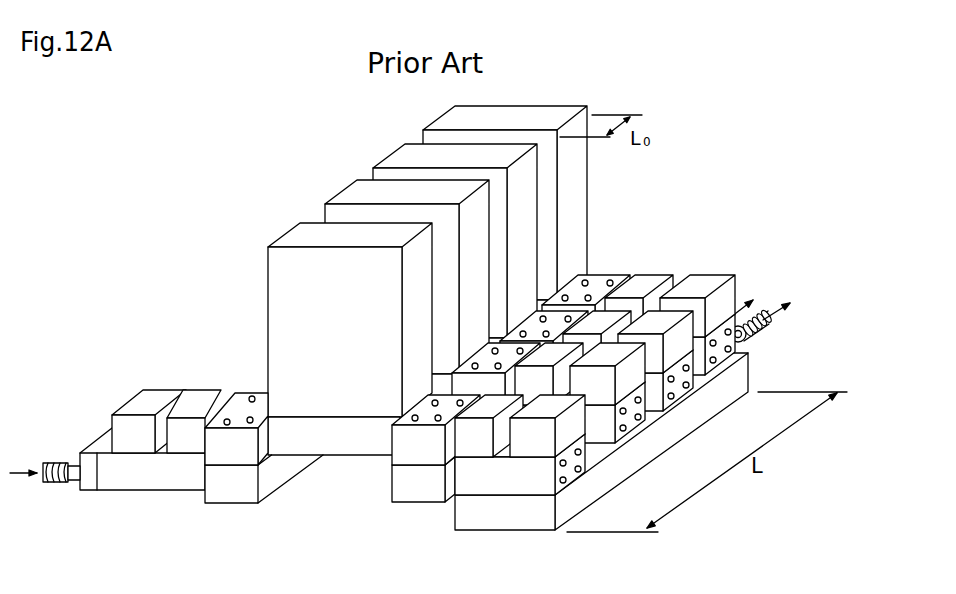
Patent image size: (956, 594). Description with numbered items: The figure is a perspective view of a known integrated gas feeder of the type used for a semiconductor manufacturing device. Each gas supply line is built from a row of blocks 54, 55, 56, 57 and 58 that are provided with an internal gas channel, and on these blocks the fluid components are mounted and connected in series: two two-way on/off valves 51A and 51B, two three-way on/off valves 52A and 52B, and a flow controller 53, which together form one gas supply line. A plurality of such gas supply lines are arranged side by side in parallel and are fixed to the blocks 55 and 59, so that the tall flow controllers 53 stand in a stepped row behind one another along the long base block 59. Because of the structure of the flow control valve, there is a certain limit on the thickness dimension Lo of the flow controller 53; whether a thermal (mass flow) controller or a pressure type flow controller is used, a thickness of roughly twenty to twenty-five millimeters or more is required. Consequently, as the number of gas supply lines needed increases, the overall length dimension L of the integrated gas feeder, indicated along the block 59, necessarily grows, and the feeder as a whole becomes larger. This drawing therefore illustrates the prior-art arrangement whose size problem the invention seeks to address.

The two-way on/off valve 51A is at (140, 407).
The two-way on/off valve 51B is at (203, 402).
The three-way on/off valve 52A is at (533, 438).
The three-way on/off valve 52B is at (477, 438).
The flow controller 53 is at (292, 298).
The block 54 is at (133, 478).
The block 55 is at (227, 490).
The block 56 is at (248, 445).
The block 57 is at (337, 450).
The block 58 is at (507, 478).
The block 59 is at (652, 443).